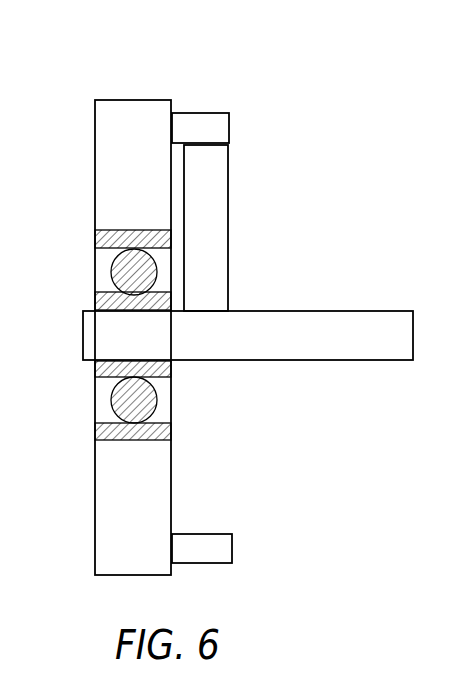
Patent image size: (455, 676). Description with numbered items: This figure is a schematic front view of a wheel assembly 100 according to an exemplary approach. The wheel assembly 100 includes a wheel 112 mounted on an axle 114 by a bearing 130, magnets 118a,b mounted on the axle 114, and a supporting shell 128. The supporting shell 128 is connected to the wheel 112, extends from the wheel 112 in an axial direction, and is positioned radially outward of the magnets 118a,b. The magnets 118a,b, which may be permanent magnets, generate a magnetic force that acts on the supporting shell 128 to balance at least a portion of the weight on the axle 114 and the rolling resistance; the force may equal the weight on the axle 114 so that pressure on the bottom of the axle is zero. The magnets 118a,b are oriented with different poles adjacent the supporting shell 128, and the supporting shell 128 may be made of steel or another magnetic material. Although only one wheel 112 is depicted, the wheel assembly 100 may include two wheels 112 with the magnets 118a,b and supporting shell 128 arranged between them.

The wheel assembly 100 is at (267, 52).
The wheel 112 is at (131, 100).
The axle 114 is at (305, 311).
The magnets 118a,b is at (228, 190).
The supporting shell 128 is at (196, 113).
The bearing 130 is at (95, 240).